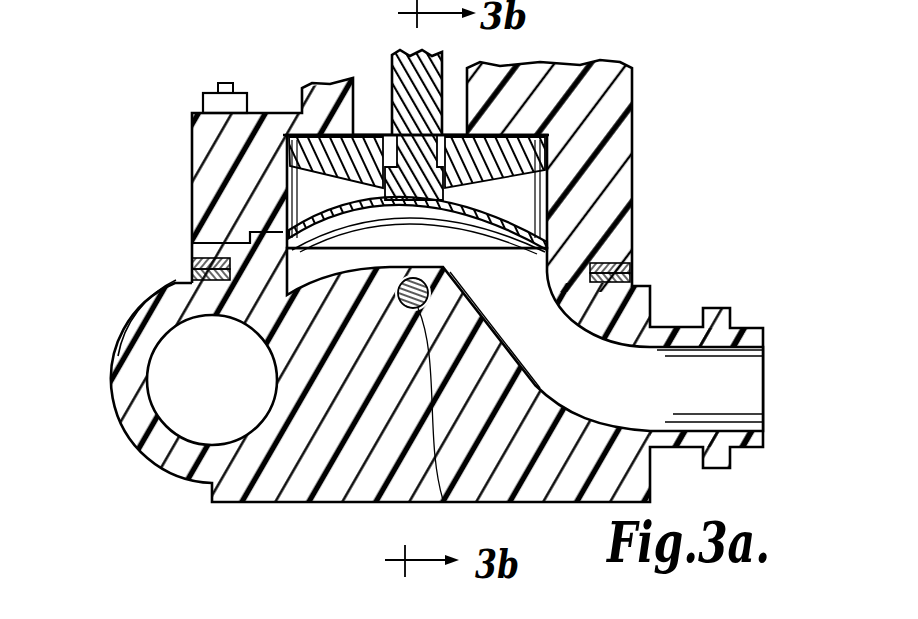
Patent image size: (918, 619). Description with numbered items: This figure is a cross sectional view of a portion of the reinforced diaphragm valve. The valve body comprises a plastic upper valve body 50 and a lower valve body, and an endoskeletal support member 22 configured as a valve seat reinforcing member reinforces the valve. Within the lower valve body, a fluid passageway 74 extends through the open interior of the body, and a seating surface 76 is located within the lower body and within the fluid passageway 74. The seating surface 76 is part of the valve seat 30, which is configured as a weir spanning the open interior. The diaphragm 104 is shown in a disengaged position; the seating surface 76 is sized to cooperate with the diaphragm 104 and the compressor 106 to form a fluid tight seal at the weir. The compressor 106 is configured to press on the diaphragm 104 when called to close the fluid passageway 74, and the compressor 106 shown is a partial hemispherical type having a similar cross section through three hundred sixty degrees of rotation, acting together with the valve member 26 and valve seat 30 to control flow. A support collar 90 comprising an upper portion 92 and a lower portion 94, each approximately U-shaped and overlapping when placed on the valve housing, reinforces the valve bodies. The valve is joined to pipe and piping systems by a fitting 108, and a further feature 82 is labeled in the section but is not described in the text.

The valve body 22 is at (293, 500).
The housing block 26 is at (280, 200).
The inlet passage 30 is at (133, 323).
The upper housing 50 is at (607, 92).
The outlet pipe 74 is at (733, 383).
The backing plate 76 is at (527, 197).
The pin 82 is at (443, 500).
The seal 90 is at (650, 273).
The seal ring 92 is at (192, 262).
The seal ring 94 is at (192, 276).
The diaphragm 104 is at (567, 238).
The retainer 106 is at (520, 148).
The stem travel arrow 108 is at (373, 112).